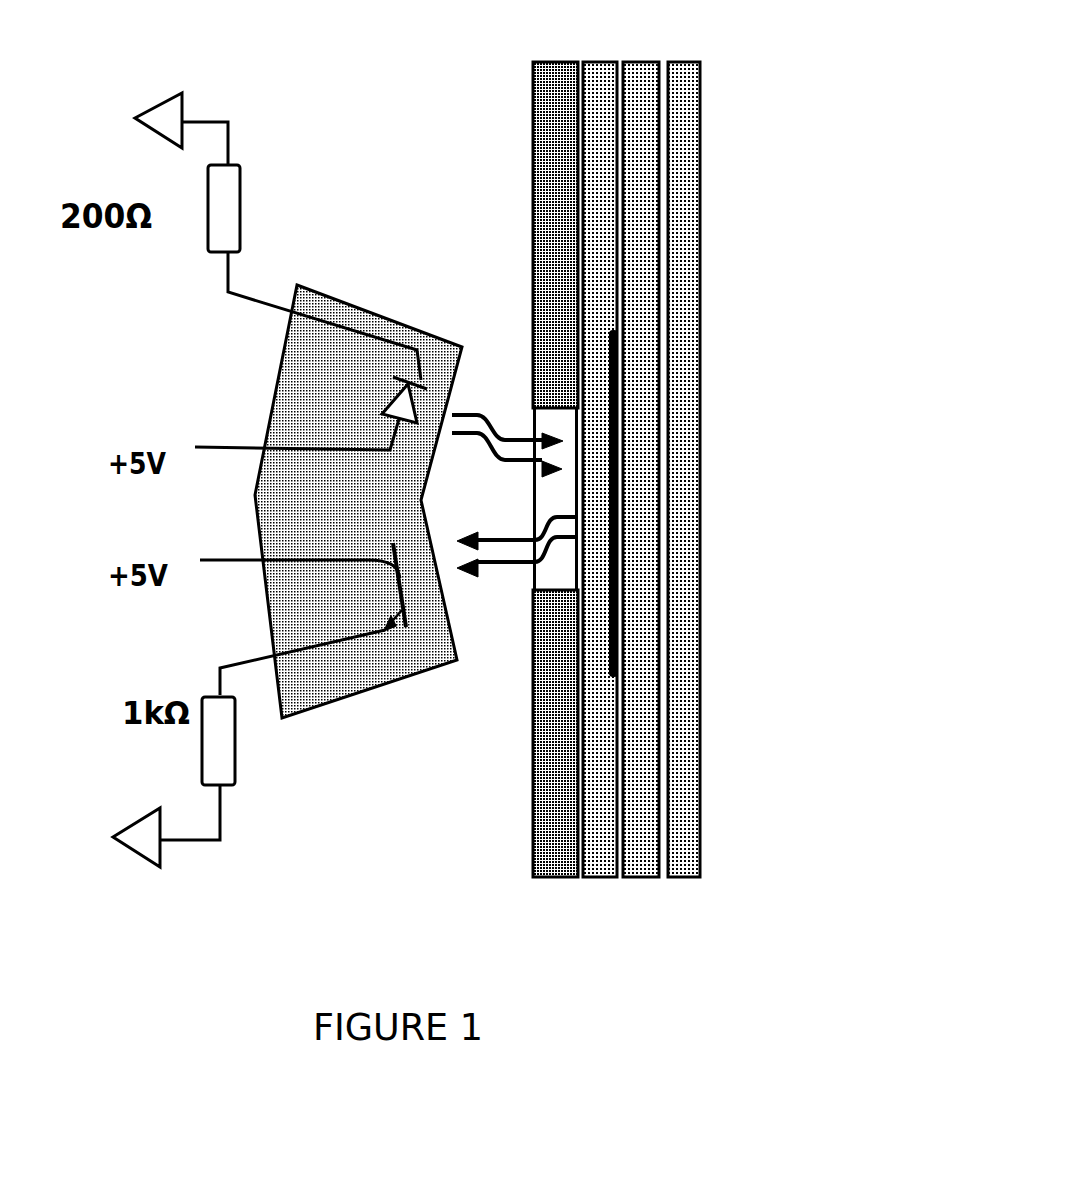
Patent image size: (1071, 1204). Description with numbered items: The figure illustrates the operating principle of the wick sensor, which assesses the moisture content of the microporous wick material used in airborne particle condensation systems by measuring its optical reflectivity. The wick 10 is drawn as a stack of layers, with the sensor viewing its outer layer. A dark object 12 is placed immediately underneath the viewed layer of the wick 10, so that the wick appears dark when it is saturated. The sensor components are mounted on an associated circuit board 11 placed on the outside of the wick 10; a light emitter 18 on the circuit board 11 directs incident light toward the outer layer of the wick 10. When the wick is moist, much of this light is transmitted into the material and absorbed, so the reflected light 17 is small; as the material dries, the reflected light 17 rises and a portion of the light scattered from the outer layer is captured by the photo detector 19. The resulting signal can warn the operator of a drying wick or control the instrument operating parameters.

The layered display panel 10 is at (703, 68).
The flexible circuit board 11 is at (378, 305).
The light guide strip 12 is at (617, 367).
The reflected light 17 is at (473, 585).
The light emitting diode 18 is at (382, 404).
The photodetector 19 is at (380, 585).